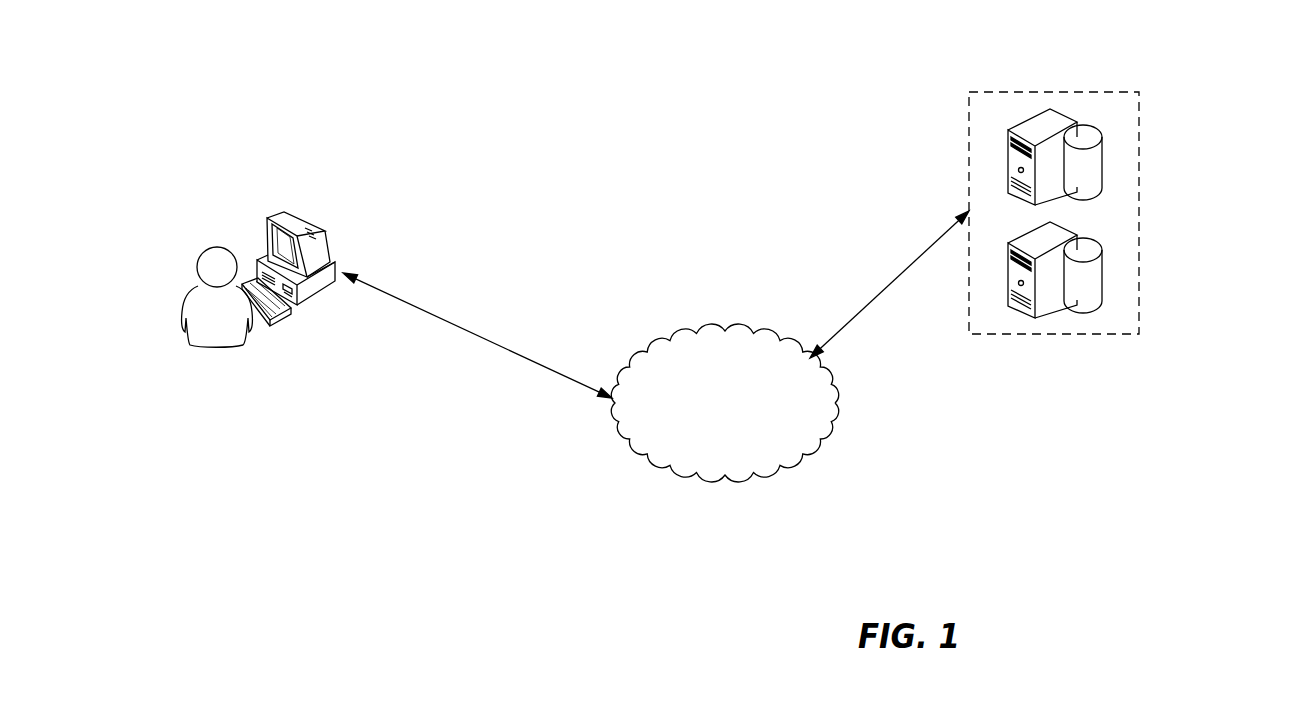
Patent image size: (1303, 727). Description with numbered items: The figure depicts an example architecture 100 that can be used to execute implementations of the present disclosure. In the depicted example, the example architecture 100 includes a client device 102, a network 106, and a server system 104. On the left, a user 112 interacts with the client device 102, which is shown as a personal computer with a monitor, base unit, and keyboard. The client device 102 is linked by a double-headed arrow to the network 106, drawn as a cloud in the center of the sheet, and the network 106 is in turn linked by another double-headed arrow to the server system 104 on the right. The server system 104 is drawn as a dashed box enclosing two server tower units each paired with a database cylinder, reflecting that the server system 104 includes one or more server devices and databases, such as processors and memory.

The example architecture 100 is at (577, 88).
The client device 102 is at (265, 223).
The server system 104 is at (1139, 212).
The network 106 is at (725, 331).
The user 112 is at (216, 345).